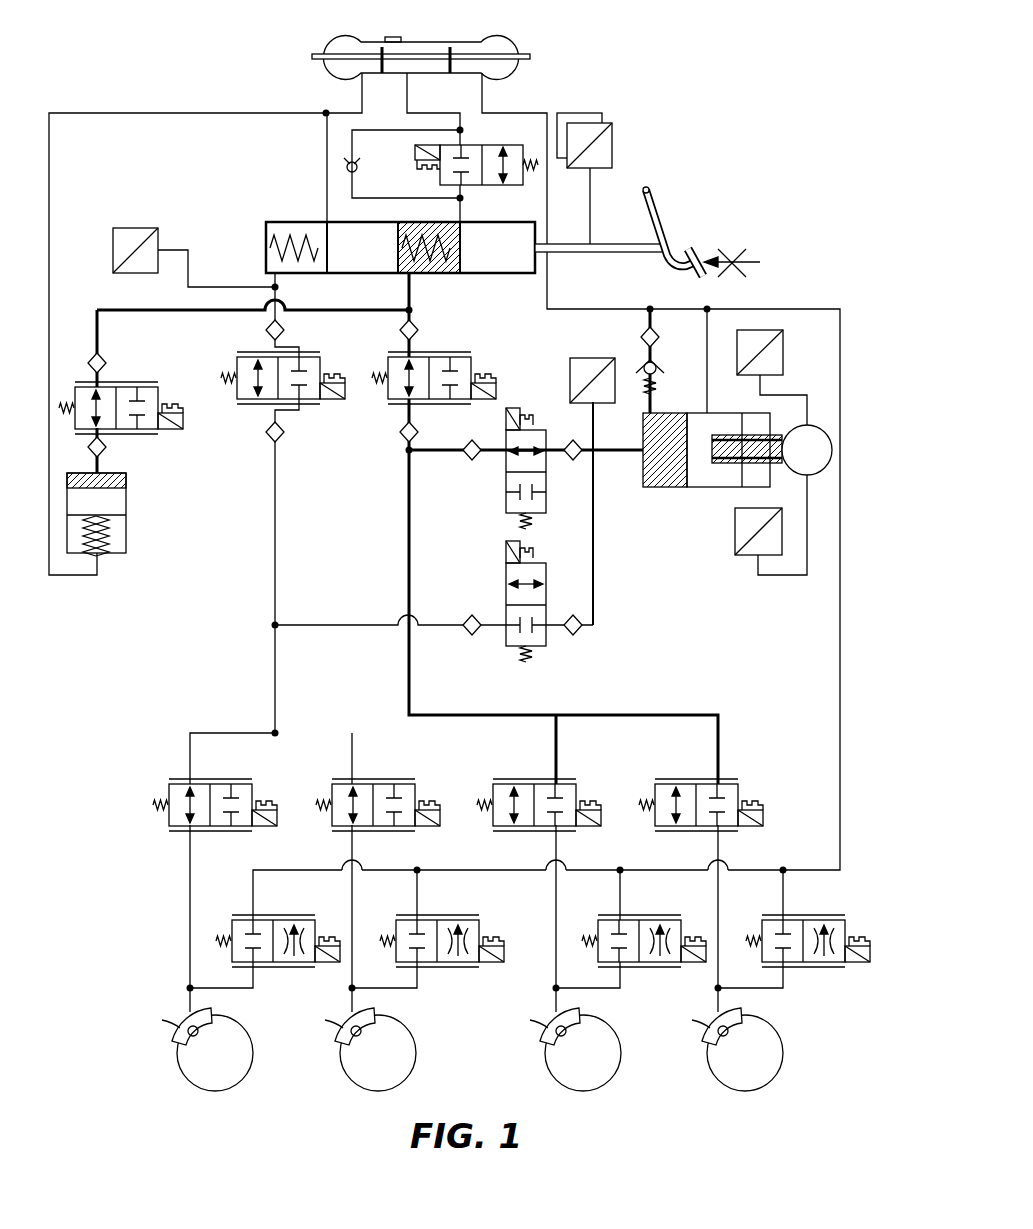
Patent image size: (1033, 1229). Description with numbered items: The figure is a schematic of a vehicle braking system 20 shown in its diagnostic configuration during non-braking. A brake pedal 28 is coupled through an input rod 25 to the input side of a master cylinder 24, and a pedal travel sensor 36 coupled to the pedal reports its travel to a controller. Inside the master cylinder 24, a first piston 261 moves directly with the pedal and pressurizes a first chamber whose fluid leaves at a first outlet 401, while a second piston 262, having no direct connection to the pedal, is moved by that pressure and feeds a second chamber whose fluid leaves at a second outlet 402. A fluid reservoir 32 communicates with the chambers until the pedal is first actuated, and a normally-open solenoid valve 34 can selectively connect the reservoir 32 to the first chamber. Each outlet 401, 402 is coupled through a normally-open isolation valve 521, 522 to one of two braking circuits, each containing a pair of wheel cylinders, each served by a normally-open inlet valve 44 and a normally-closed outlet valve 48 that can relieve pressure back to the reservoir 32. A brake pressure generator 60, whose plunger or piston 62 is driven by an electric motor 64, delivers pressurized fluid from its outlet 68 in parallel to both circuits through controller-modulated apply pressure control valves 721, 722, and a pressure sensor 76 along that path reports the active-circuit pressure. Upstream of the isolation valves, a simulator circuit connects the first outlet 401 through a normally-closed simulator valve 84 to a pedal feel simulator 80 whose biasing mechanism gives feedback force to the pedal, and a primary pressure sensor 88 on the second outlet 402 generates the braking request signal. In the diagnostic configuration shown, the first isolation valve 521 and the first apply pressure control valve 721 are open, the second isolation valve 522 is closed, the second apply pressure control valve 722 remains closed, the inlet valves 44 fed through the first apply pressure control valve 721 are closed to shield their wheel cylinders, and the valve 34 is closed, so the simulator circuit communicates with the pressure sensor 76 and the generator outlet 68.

The braking system 20 is at (753, 136).
The master cylinder 24 is at (370, 234).
The input rod 25 is at (607, 245).
The first piston 261 is at (514, 262).
The second piston 262 is at (378, 262).
The brake pedal 28 is at (693, 250).
The fluid reservoir 32 is at (521, 34).
The normally-open solenoid valve 34 is at (490, 143).
The pedal travel sensor 36 is at (613, 140).
The first outlet 401 is at (412, 276).
The second outlet 402 is at (264, 277).
The inlet valve 44 is at (221, 782).
The outlet valve 48 is at (266, 920).
The first isolation valve 521 is at (440, 357).
The second isolation valve 522 is at (302, 401).
The brake pressure generator 60 is at (757, 448).
The plunger or piston 62 is at (714, 487).
The electric motor 64 is at (832, 447).
The outlet 68 is at (639, 455).
The first apply pressure control valve 721 is at (505, 478).
The second apply pressure control valve 722 is at (505, 635).
The pressure sensor 76 is at (598, 358).
The pedal feel simulator 80 is at (127, 500).
The simulator valve 84 is at (122, 387).
The primary pressure sensor 88 is at (137, 228).